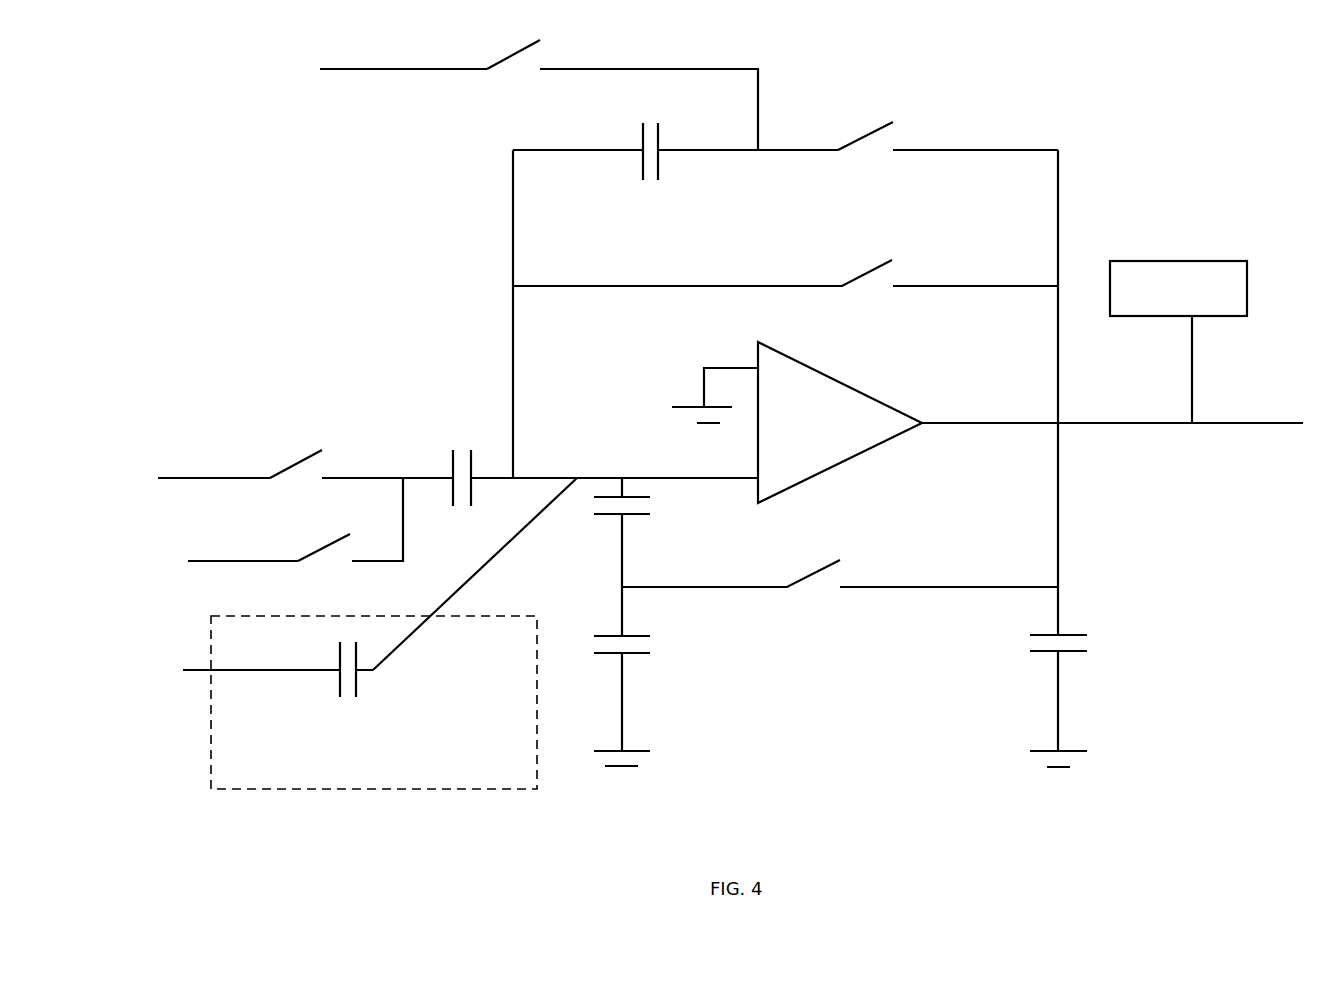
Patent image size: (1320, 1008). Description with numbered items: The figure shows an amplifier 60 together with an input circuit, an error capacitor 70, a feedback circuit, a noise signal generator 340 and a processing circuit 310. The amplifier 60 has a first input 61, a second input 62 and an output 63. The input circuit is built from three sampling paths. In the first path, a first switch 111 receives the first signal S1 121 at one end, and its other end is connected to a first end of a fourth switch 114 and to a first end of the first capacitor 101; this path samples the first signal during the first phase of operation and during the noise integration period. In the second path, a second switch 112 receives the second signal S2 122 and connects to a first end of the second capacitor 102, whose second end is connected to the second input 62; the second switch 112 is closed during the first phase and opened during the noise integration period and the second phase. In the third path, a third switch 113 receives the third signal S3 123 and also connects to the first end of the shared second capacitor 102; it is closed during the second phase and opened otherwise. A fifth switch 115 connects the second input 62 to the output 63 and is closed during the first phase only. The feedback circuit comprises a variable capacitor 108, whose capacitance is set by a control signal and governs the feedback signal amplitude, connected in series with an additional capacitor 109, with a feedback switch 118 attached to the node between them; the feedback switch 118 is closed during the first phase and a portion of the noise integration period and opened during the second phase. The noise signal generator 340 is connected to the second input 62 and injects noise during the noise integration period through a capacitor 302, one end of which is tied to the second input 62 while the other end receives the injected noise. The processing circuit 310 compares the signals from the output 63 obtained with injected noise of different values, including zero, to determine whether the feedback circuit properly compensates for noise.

The first signal S1 121 is at (367, 70).
The first switch 111 is at (622, 95).
The first capacitor 101 is at (675, 149).
The fourth switch 114 is at (940, 134).
The fifth switch 115 is at (785, 268).
The amplifier 60 is at (840, 422).
The first input 61 is at (758, 360).
The second input 62 is at (758, 480).
The output 63 is at (922, 423).
The processing circuit 310 is at (1178, 342).
The second signal S2 122 is at (196, 462).
The second switch 112 is at (361, 474).
The second capacitor 102 is at (442, 476).
The third signal S3 123 is at (234, 545).
The third switch 113 is at (350, 529).
The noise signal generator 340 is at (400, 790).
The capacitor 302 is at (356, 697).
The variable capacitor 108 is at (632, 557).
The feedback switch 118 is at (810, 577).
The additional capacitor 109 is at (650, 653).
The error capacitor 70 is at (1058, 689).